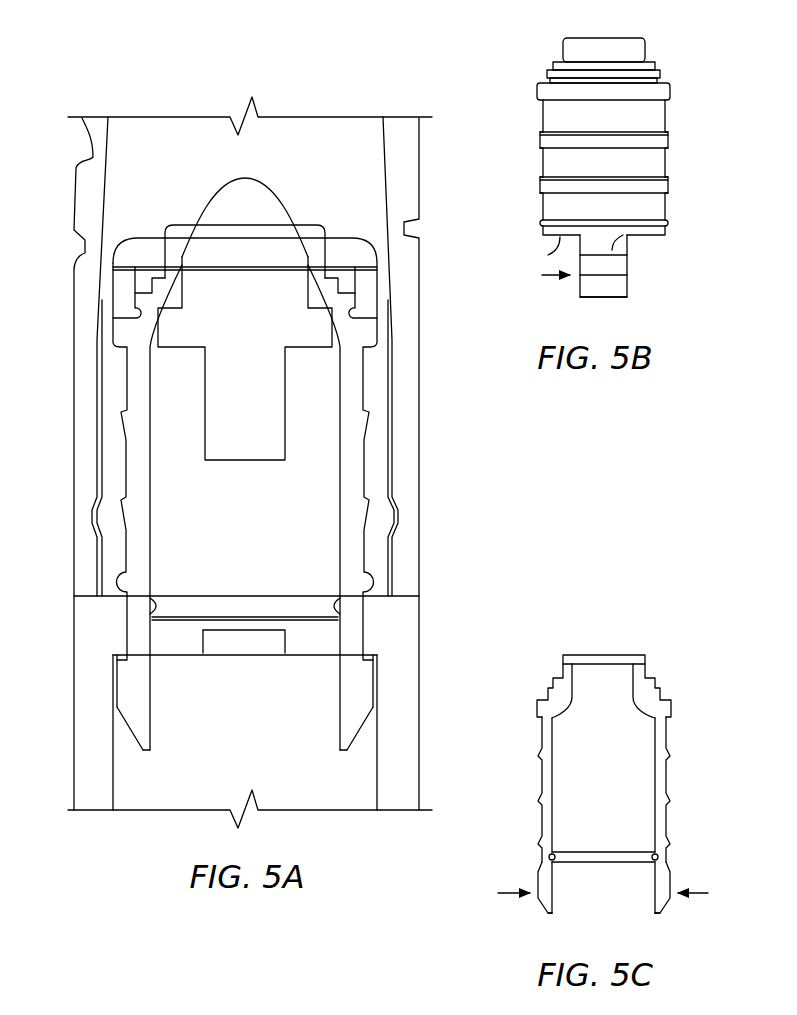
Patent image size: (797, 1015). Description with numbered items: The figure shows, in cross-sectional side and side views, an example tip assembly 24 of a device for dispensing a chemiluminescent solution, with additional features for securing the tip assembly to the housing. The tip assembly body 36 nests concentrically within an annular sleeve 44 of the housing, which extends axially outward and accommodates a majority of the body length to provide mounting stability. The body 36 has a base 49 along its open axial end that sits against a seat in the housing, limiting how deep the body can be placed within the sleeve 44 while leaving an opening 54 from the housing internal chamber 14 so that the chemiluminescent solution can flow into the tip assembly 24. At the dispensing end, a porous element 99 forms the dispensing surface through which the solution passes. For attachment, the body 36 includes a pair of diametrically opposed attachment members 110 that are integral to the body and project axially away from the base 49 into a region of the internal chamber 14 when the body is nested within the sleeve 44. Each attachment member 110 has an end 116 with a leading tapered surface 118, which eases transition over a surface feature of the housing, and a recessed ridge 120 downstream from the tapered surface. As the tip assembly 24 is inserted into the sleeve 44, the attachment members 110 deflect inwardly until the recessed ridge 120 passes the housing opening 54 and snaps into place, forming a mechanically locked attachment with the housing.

In FIG. 5A, the housing internal chamber 14 is at (115, 780).
In FIG. 5A, the tip assembly 24 is at (150, 418).
In FIG. 5B, the tip assembly 24 is at (671, 80).
In FIG. 5C, the tip assembly 24 is at (672, 698).
In FIG. 5A, the body 36 is at (124, 459).
In FIG. 5B, the body 36 is at (668, 160).
In FIG. 5C, the body 36 is at (672, 780).
In FIG. 5A, the annular sleeve 44 is at (98, 494).
In FIG. 5A, the base 49 is at (160, 618).
In FIG. 5B, the base 49 is at (548, 255).
In FIG. 5A, the opening 54 is at (350, 622).
In FIG. 5C, the porous element 99 is at (549, 857).
In FIG. 5A, the attachment members 110 is at (133, 684).
In FIG. 5B, the attachment members 110 is at (626, 266).
In FIG. 5C, the attachment members 110 is at (672, 884).
In FIG. 5A, the ends 116 is at (145, 752).
In FIG. 5B, the ends 116 is at (618, 297).
In FIG. 5C, the ends 116 is at (660, 913).
In FIG. 5A, the leading tapered surface 118 is at (128, 727).
In FIG. 5B, the leading tapered surface 118 is at (588, 285).
In FIG. 5C, the leading tapered surface 118 is at (540, 903).
In FIG. 5A, the recessed ridge 120 is at (372, 660).
In FIG. 5B, the recessed ridge 120 is at (623, 228).
In FIG. 5C, the recessed ridge 120 is at (670, 868).